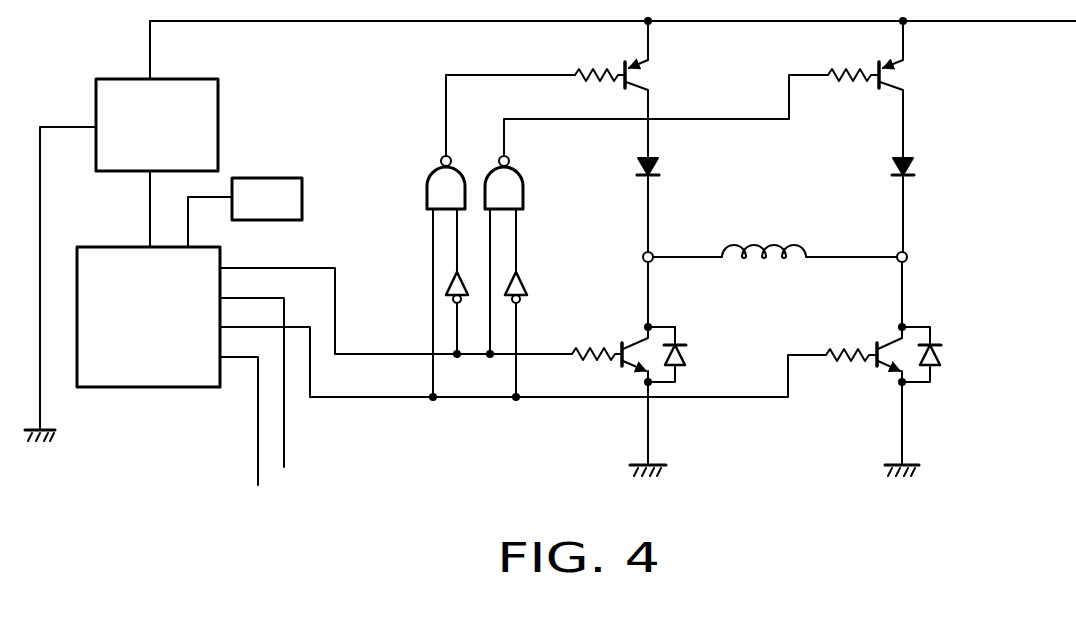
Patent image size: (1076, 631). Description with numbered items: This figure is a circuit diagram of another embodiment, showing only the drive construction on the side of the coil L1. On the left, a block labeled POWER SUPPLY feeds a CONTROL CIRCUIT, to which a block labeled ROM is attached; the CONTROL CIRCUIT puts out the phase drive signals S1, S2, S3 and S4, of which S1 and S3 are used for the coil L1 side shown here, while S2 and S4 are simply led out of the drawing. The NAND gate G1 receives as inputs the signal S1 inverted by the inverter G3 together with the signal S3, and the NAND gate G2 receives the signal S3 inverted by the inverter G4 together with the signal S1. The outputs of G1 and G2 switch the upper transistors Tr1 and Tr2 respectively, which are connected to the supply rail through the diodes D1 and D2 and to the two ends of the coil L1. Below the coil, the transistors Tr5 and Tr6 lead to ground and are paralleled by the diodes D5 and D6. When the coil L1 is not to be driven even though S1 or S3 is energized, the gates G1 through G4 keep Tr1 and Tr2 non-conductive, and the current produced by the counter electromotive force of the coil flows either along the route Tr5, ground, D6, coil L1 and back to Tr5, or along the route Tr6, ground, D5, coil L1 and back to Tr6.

The power supply POWER SUPPLY is at (157, 125).
The read-only memory ROM is at (245, 212).
The control circuit CONTROL CIRCUIT is at (148, 317).
The phase drive signal S1 is at (396, 299).
The second control signal line S2 is at (252, 370).
The phase drive signal S3 is at (523, 350).
The fourth control signal line S4 is at (239, 409).
The NAND gate G1 is at (479, 236).
The NAND gate G2 is at (656, 214).
The inverter G3 is at (468, 304).
The inverter G4 is at (529, 325).
The transistor Tr1 is at (636, 89).
The transistor Tr2 is at (889, 89).
The transistor Tr5 is at (633, 340).
The transistor Tr6 is at (889, 341).
The first diode D1 is at (666, 204).
The second diode D2 is at (923, 204).
The diode D5 is at (684, 354).
The diode D6 is at (942, 354).
The coil L1 is at (775, 237).